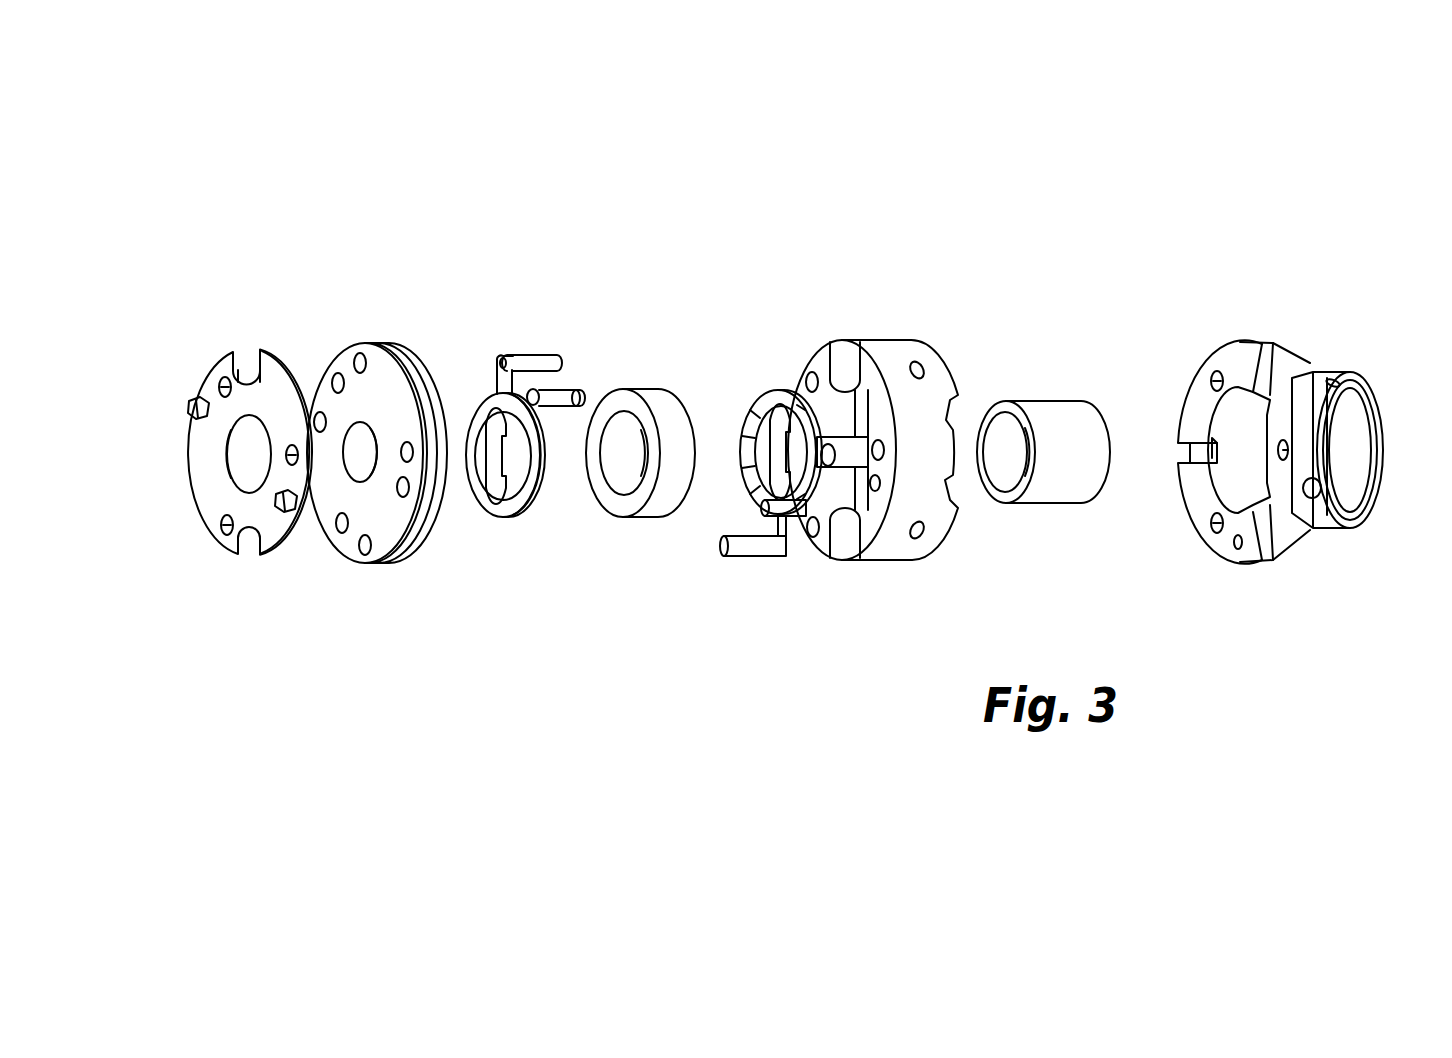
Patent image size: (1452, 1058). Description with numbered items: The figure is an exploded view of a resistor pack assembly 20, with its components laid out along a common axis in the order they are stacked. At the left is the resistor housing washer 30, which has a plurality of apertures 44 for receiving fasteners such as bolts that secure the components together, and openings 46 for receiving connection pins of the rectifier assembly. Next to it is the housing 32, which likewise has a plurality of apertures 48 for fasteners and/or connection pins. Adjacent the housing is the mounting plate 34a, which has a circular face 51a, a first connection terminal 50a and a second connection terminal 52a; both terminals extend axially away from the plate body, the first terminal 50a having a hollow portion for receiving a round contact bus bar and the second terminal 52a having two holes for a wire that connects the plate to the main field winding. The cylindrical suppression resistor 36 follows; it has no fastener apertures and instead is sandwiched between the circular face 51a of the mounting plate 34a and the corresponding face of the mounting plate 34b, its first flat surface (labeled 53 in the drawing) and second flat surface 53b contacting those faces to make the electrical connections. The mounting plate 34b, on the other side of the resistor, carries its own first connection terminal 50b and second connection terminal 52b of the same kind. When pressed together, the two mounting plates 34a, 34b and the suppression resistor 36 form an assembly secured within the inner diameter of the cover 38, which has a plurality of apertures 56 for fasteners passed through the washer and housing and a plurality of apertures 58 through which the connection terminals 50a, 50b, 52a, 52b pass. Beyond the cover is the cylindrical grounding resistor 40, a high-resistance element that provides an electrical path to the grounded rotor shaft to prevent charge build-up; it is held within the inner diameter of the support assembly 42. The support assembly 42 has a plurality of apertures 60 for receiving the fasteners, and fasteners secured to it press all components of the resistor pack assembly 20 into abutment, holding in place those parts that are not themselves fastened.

The resistor pack assembly 20 is at (264, 195).
The resistor housing washer 30 is at (232, 333).
The housing 32 is at (362, 577).
The mounting plate 34a is at (529, 337).
The mounting plate 34b is at (745, 381).
The cylindrical suppression resistor 36 is at (617, 533).
The cover 38 is at (847, 577).
The cylindrical grounding resistor 40 is at (1062, 387).
The support assembly 42 is at (1280, 329).
The apertures 44 is at (287, 455).
The apertures or openings 46 is at (246, 376).
The apertures 48 is at (320, 420).
The first connection terminal 50a is at (549, 354).
The first connection terminal 50b is at (721, 546).
The circular face 51a is at (533, 495).
The second connection terminal 52a is at (566, 390).
The second connection terminal 52b is at (760, 511).
The bore 53 is at (620, 400).
The second flat surface 53b is at (690, 422).
The apertures 56 is at (811, 379).
The apertures 58 is at (856, 395).
The apertures 60 is at (1212, 382).